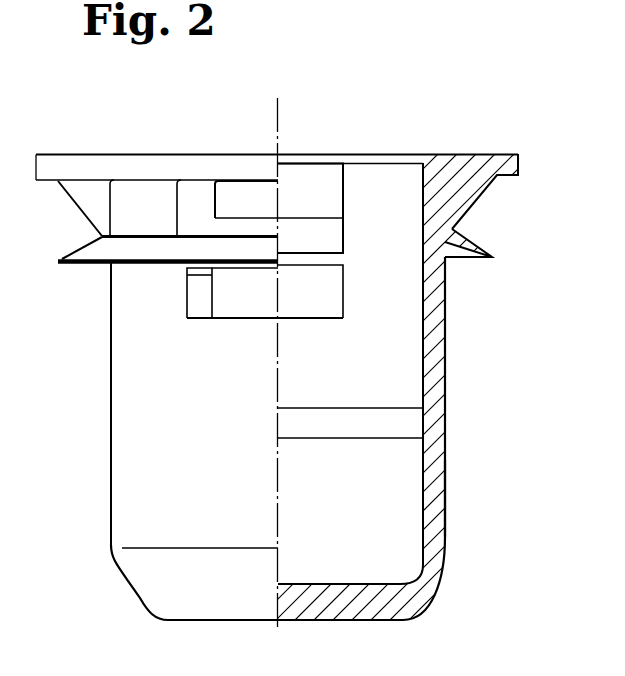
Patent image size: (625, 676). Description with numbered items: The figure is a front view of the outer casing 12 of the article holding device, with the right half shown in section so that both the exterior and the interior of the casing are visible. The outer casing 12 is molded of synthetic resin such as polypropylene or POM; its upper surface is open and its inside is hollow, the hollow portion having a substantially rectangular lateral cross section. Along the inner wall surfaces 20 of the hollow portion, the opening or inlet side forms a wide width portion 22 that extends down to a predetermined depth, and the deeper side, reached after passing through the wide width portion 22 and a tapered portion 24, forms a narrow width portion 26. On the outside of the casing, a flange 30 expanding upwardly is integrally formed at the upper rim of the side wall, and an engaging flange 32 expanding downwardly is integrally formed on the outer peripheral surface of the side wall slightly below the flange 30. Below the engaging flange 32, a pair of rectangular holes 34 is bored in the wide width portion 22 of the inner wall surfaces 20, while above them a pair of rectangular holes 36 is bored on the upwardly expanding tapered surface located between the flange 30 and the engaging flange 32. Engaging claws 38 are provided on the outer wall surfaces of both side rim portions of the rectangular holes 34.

The outer casing 12 is at (411, 109).
The inner wall surfaces 20 is at (416, 204).
The wide width portion 22 is at (390, 343).
The tapered portion 24 is at (403, 428).
The narrow width portion 26 is at (403, 503).
The flange 30 is at (518, 167).
The engaging flange 32 is at (492, 255).
The rectangular holes 34 is at (234, 320).
The rectangular holes 36 is at (236, 181).
The engaging claws 38 is at (202, 290).